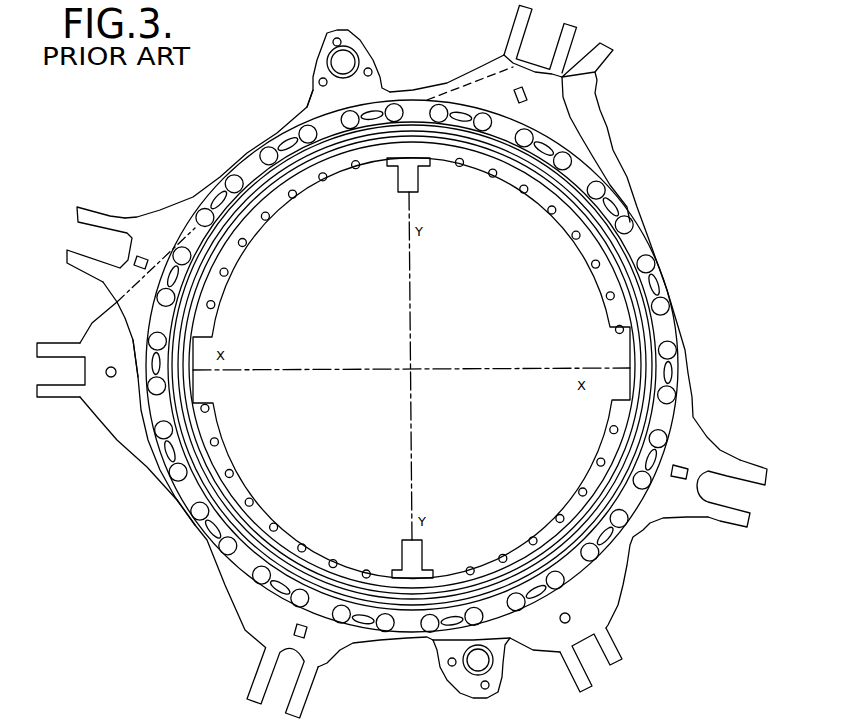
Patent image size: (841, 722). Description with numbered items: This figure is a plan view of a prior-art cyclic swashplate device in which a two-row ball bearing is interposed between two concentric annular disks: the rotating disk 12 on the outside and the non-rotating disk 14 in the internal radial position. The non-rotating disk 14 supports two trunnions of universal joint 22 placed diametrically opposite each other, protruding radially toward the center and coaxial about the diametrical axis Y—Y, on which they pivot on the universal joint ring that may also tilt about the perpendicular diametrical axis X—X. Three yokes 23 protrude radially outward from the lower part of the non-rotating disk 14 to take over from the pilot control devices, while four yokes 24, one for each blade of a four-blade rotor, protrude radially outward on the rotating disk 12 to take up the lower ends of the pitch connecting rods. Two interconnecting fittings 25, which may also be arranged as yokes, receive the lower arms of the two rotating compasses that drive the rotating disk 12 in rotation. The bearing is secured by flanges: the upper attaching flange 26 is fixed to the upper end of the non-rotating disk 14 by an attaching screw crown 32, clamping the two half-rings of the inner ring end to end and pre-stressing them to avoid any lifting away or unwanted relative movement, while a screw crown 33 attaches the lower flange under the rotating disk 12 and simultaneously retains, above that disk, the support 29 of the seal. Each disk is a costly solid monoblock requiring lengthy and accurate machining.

The rotating disk 12 is at (150, 233).
The non-rotating disk 14 is at (595, 135).
The trunnions of universal joint 22 is at (403, 173).
The yokes 23 is at (595, 72).
The yokes 24 is at (517, 15).
The interconnecting fittings 25 is at (362, 42).
The upper attaching flange 26 is at (535, 190).
The seal support 29 is at (637, 265).
The attaching screw crown 32 is at (576, 230).
The screw crown 33 is at (630, 222).